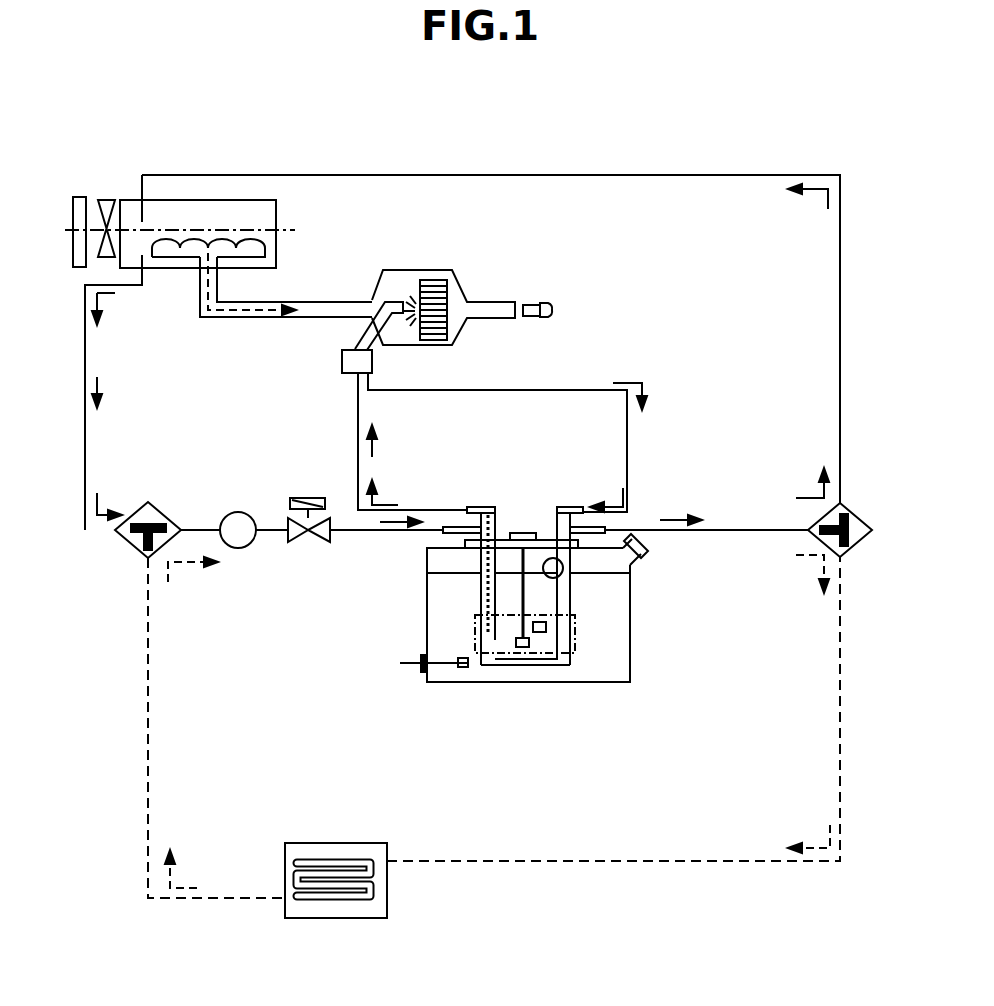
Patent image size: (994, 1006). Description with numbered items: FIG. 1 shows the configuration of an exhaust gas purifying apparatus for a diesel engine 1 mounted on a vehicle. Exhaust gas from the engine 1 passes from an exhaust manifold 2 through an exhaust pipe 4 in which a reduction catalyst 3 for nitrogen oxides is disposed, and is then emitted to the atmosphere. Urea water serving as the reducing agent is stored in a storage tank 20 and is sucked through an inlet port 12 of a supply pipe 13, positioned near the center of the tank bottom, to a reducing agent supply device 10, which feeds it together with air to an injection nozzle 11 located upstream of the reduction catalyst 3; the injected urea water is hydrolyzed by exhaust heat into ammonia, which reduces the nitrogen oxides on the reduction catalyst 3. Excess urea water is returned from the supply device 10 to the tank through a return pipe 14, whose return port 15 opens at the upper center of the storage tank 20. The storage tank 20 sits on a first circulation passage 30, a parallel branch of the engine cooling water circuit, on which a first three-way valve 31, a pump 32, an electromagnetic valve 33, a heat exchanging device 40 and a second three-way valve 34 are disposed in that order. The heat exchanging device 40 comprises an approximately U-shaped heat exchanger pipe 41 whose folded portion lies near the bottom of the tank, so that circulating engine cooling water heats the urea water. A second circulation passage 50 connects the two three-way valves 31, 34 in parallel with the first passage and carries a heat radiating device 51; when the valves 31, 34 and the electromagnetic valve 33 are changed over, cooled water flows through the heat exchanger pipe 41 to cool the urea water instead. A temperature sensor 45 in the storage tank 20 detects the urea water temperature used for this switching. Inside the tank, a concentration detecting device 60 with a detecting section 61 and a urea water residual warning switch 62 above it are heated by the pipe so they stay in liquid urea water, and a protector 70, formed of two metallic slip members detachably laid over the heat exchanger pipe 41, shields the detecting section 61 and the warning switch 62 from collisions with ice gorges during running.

The engine 1 is at (122, 199).
The exhaust manifold 2 is at (265, 252).
The reduction catalyst 3 is at (437, 281).
The exhaust pipe 4 is at (320, 302).
The reducing agent supply device 10 is at (342, 362).
The injection nozzle 11 is at (406, 283).
The inlet port 12 is at (497, 634).
The supply pipe 13 is at (358, 465).
The return pipe 14 is at (630, 447).
The return port 15 is at (565, 573).
The storage tank 20 is at (427, 637).
The first circulation passage 30 is at (386, 176).
The first three-way valve 31 is at (160, 512).
The pump 32 is at (245, 514).
The electromagnetic valve 33 is at (298, 540).
The second three-way valve 34 is at (855, 512).
The heat exchanging device 40 is at (558, 668).
The heat exchanger pipe 41 is at (427, 575).
The temperature sensor 45 is at (440, 670).
The second circulation passage 50 is at (648, 862).
The heat radiating device 51 is at (330, 918).
The concentration detecting device 60 is at (547, 628).
The detecting section 61 is at (522, 657).
The urea water residual warning switch 62 is at (575, 640).
The protector 70 is at (575, 665).